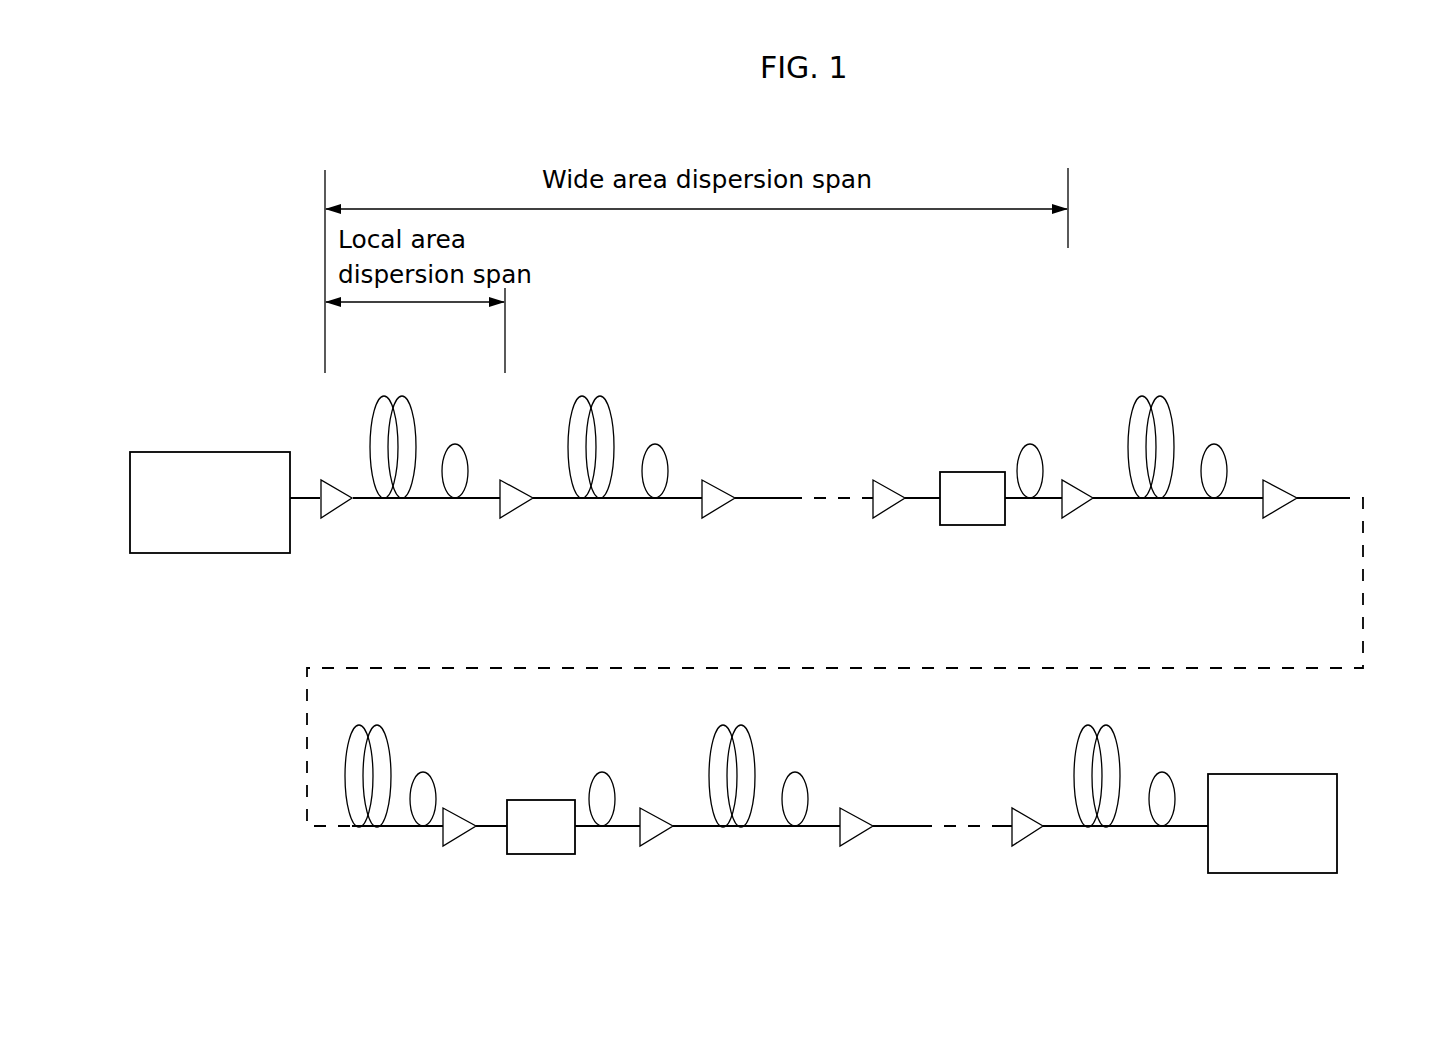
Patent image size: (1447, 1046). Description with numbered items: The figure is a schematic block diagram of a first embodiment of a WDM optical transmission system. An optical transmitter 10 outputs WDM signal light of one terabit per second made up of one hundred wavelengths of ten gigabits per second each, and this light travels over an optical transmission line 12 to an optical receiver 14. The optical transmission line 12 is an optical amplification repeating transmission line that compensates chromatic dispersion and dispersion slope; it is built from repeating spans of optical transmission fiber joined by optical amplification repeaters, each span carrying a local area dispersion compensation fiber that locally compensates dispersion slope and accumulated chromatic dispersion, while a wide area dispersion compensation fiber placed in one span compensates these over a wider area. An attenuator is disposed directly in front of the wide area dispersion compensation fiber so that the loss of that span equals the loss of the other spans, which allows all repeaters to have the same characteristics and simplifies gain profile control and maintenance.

The optical transmitter 10 is at (232, 460).
The optical transmission line 12 is at (1339, 489).
The optical receiver 14 is at (1266, 862).